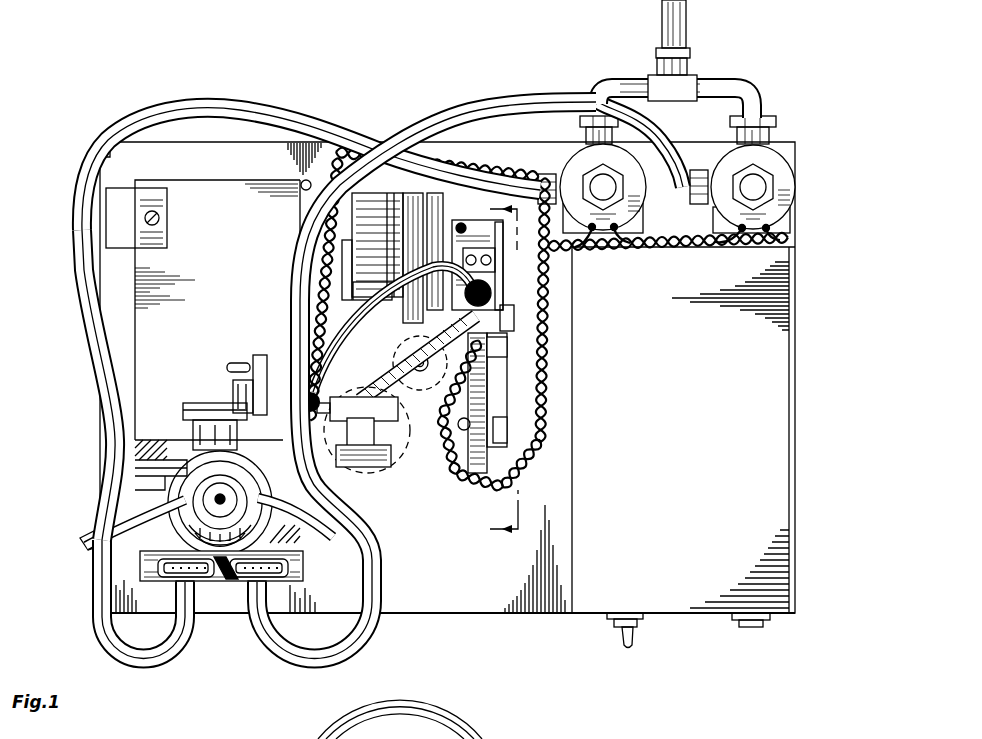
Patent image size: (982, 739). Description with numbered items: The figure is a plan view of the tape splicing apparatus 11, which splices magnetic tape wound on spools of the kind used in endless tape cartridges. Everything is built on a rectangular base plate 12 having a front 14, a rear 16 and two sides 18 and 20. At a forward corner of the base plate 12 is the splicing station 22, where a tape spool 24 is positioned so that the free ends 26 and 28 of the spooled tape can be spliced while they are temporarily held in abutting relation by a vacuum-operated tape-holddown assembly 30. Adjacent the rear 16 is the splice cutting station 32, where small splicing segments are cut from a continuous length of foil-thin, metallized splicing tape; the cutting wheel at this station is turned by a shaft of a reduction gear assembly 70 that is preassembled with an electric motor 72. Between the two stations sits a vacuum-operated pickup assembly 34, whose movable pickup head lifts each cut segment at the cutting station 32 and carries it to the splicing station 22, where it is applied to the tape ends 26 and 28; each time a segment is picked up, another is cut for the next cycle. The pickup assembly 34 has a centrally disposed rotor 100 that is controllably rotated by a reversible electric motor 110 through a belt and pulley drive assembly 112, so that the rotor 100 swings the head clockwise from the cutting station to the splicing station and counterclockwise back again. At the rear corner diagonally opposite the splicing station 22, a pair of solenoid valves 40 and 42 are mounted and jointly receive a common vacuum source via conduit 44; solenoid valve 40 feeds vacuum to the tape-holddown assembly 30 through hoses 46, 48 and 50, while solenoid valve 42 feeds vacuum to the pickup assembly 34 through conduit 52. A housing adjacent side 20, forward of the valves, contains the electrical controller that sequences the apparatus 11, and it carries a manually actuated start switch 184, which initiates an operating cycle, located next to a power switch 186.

The tape splicing apparatus 11 is at (447, 348).
The base plate 12 is at (470, 583).
The front 14 is at (456, 614).
The rear 16 is at (233, 142).
The side 18 is at (94, 397).
The side 20 is at (797, 408).
The splicing station 22 is at (159, 420).
The tape spool 24 is at (238, 470).
The free end 26 is at (84, 542).
The free end 28 is at (331, 540).
The tape-holddown assembly 30 is at (220, 590).
The splice cutting station 32 is at (513, 322).
The pickup assembly 34 is at (407, 475).
The solenoid valve 40 is at (640, 210).
The solenoid valve 42 is at (786, 193).
The conduit 44 is at (690, 35).
The hose 46 is at (142, 125).
The hose 48 is at (93, 625).
The hose 50 is at (365, 645).
The conduit 52 is at (515, 97).
The reduction gear assembly 70 is at (408, 225).
The electric motor 72 is at (358, 288).
The rotor 100 is at (368, 470).
The reversible electric motor 110 is at (406, 344).
The belt and pulley drive assembly 112 is at (385, 371).
The start switch 184 is at (752, 627).
The power switch 186 is at (628, 648).